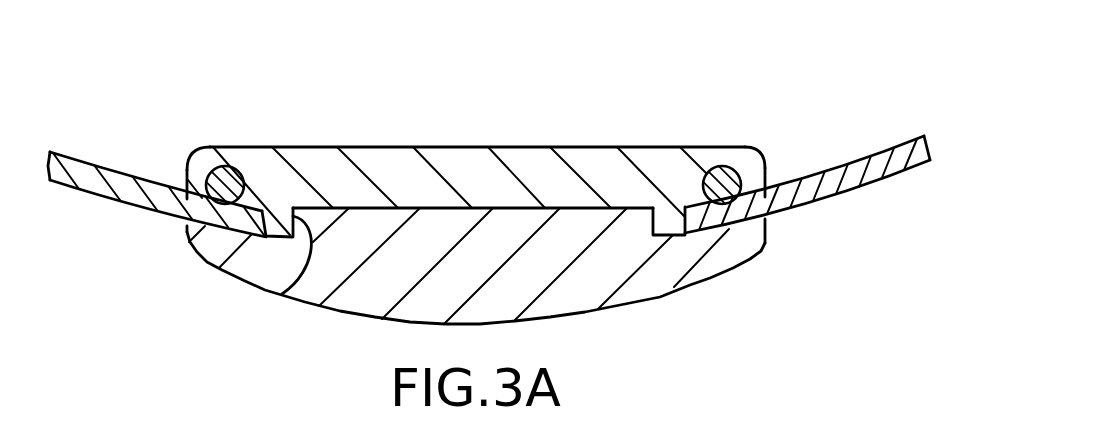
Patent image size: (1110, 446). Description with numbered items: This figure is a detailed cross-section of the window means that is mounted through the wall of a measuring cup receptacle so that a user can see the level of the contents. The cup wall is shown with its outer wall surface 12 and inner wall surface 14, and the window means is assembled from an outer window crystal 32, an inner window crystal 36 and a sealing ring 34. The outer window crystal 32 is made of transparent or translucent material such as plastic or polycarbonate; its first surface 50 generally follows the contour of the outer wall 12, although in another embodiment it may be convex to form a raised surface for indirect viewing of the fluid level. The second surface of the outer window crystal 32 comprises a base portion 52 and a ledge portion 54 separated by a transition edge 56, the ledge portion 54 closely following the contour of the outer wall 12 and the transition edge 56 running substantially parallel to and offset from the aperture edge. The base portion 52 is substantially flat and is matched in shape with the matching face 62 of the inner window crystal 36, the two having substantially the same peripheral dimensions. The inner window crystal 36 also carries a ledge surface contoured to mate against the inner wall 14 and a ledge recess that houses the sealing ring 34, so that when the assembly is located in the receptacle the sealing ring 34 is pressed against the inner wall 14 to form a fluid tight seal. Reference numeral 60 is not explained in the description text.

The outer wall surface 12 is at (140, 213).
The inner wall surface 14 is at (101, 173).
The outer window crystal 32 is at (508, 278).
The sealing ring 34 is at (217, 176).
The inner window crystal 36 is at (527, 158).
The first surface 50 is at (369, 327).
The base portion 52 is at (524, 209).
The ledge portion 54 is at (717, 232).
The transition edge 56 is at (278, 293).
The upper surface 60 is at (390, 147).
The matching face 62 is at (582, 207).